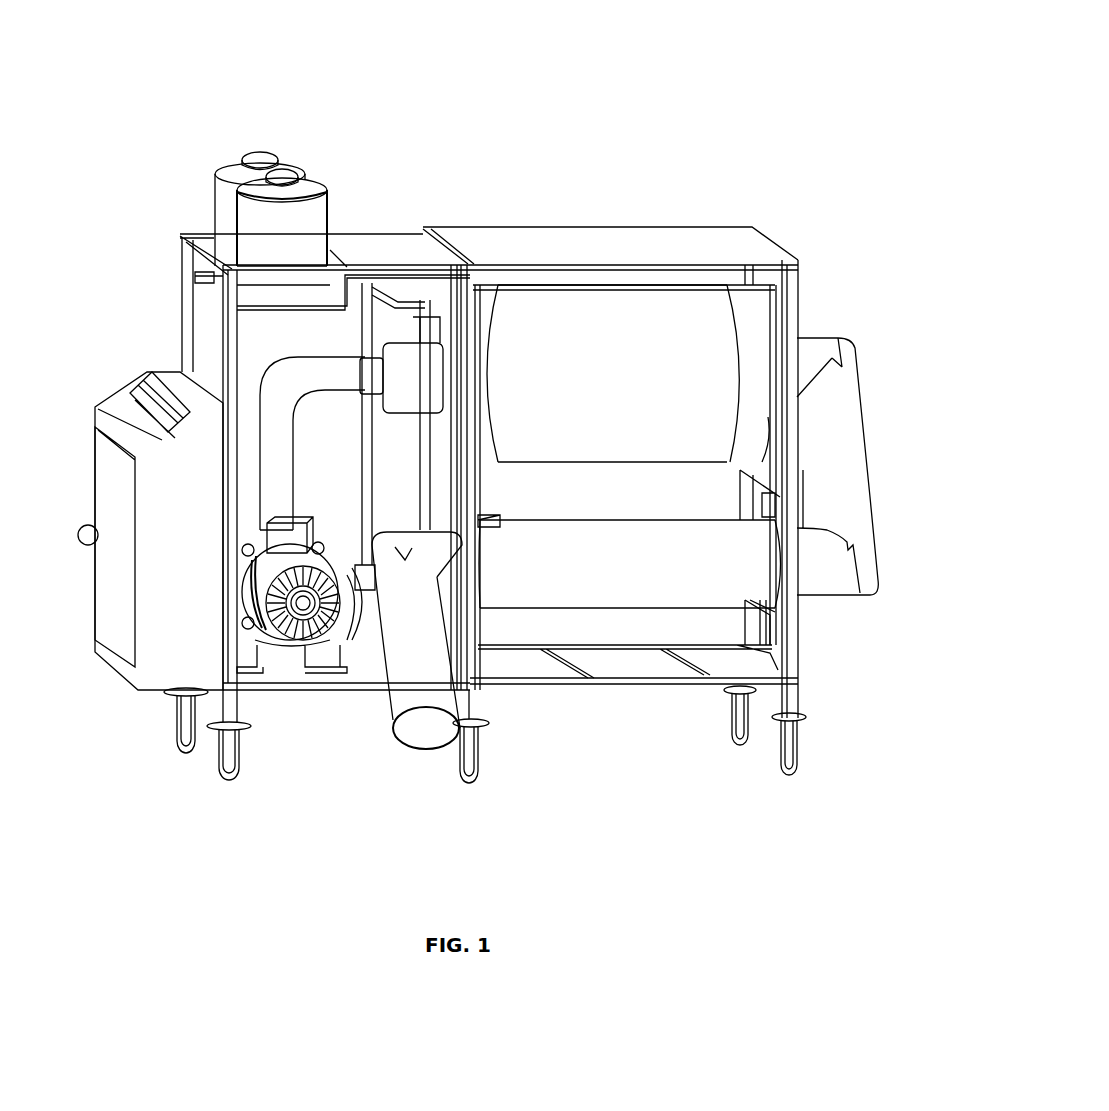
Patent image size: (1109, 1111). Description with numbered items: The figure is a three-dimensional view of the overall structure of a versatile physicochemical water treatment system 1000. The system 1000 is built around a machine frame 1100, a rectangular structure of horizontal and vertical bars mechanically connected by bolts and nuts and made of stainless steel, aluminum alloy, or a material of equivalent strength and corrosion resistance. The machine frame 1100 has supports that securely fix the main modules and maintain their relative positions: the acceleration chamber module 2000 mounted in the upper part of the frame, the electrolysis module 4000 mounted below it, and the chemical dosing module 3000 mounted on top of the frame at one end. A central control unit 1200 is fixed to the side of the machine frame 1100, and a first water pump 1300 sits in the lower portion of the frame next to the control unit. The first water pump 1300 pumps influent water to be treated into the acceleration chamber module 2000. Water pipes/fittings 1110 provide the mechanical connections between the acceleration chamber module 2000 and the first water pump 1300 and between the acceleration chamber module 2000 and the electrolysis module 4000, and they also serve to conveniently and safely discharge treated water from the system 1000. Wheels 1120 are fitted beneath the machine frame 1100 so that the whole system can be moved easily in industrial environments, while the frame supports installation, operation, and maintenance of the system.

The versatile physicochemical water treatment system 1000 is at (824, 110).
The machine frame 1100 is at (667, 223).
The water pipes/fittings 1110 is at (322, 393).
The wheels 1120 is at (800, 743).
The central control unit 1200 is at (97, 402).
The first water pump 1300 is at (293, 650).
The acceleration chamber module 2000 is at (702, 333).
The chemical dosing module 3000 is at (315, 177).
The electrolysis module 4000 is at (615, 577).